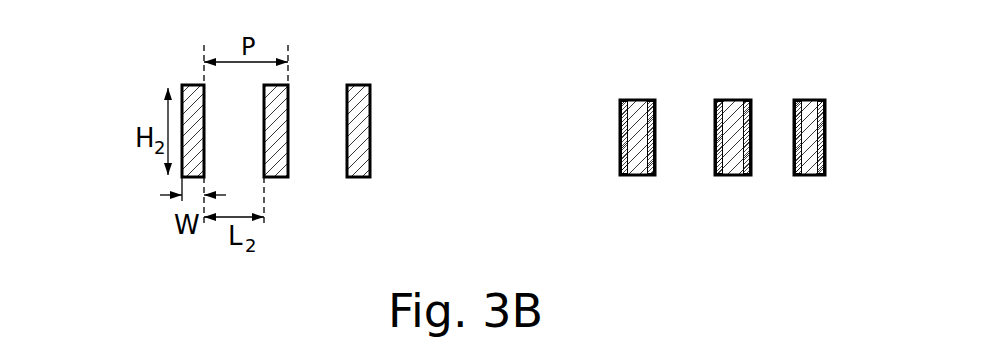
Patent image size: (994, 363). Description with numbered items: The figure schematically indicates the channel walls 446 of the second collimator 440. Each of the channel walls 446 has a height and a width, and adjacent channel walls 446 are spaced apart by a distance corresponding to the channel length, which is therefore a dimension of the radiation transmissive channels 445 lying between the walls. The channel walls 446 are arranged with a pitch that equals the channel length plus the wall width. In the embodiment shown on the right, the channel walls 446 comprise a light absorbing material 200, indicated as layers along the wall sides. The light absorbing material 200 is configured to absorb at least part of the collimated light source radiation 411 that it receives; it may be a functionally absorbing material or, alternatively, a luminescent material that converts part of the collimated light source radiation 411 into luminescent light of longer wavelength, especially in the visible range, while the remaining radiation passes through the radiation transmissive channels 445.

The second collimator 440 is at (143, 205).
The channel walls 446 is at (360, 83).
The radiation transmissive channels 445 is at (318, 162).
The collimated light source radiation 411 is at (665, 113).
The light absorbing material 200 is at (794, 174).